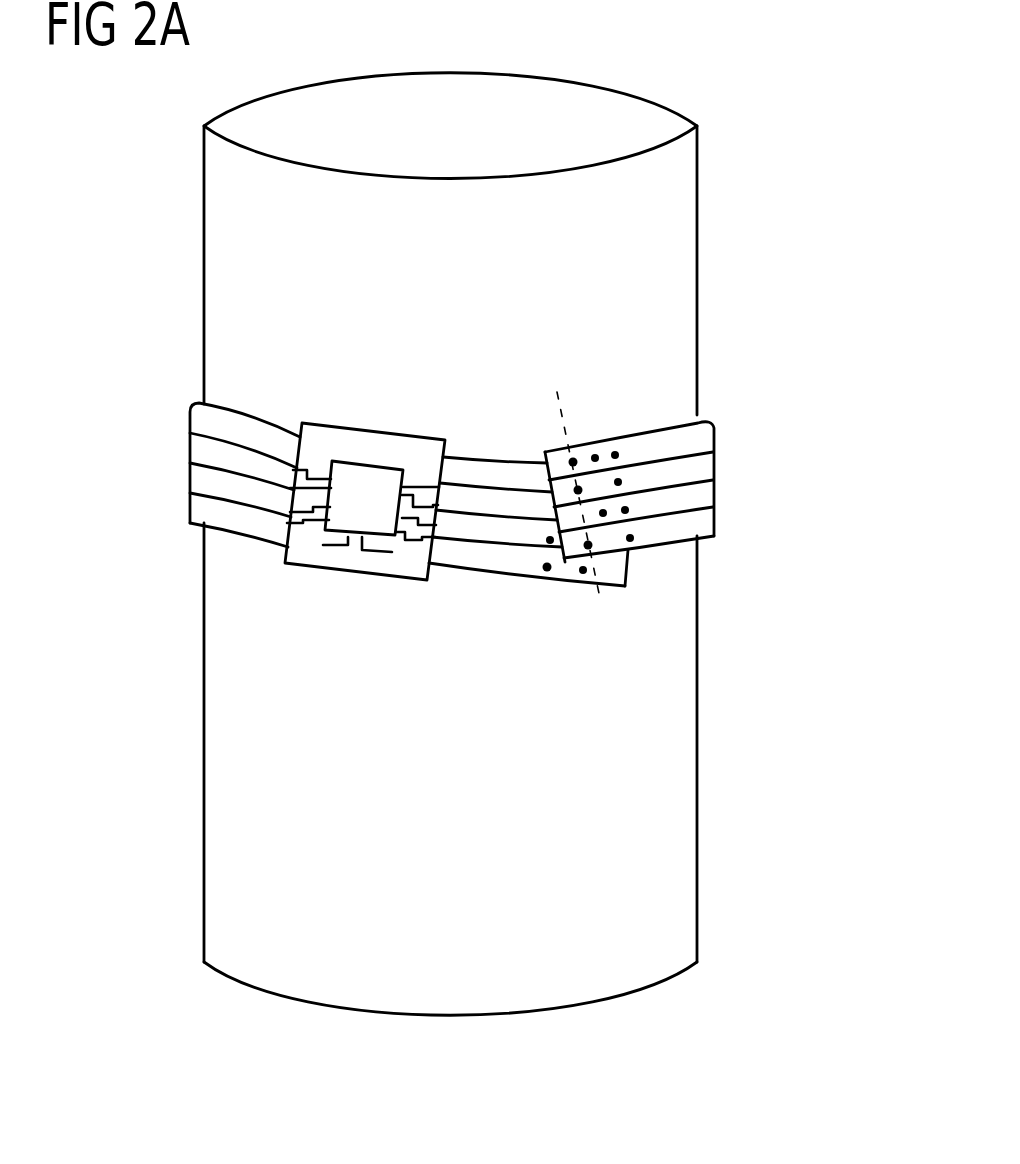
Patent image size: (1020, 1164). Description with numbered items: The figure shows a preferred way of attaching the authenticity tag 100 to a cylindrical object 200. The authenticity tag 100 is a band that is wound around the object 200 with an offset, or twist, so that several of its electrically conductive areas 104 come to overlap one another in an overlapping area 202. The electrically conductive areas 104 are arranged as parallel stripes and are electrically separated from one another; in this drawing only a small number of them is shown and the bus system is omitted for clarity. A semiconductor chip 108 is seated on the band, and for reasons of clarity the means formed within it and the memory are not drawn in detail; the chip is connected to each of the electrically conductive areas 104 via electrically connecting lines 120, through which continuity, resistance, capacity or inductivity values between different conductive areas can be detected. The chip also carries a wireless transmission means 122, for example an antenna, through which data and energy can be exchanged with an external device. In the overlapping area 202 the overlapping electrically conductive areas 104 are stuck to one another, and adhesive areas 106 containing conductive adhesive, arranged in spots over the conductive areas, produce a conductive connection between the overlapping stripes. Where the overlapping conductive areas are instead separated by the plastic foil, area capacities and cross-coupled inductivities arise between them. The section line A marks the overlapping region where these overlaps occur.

The authenticity tag 100 is at (176, 482).
The electrically conductive areas 104 is at (690, 532).
The adhesive area 106 is at (547, 567).
The semiconductor chip 108 is at (348, 410).
The electrically connecting lines 120 is at (320, 468).
The wireless transmission means 122 is at (347, 567).
The object 200 is at (653, 327).
The overlapping area 202 is at (643, 561).
The section line A is at (600, 600).